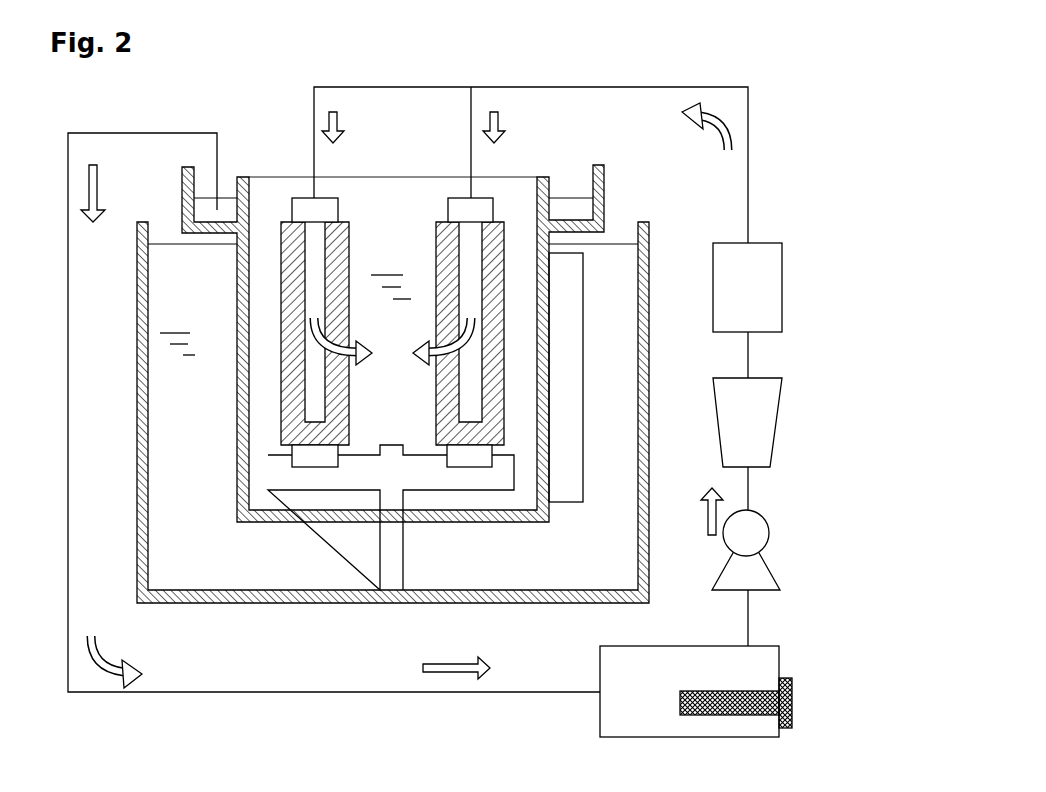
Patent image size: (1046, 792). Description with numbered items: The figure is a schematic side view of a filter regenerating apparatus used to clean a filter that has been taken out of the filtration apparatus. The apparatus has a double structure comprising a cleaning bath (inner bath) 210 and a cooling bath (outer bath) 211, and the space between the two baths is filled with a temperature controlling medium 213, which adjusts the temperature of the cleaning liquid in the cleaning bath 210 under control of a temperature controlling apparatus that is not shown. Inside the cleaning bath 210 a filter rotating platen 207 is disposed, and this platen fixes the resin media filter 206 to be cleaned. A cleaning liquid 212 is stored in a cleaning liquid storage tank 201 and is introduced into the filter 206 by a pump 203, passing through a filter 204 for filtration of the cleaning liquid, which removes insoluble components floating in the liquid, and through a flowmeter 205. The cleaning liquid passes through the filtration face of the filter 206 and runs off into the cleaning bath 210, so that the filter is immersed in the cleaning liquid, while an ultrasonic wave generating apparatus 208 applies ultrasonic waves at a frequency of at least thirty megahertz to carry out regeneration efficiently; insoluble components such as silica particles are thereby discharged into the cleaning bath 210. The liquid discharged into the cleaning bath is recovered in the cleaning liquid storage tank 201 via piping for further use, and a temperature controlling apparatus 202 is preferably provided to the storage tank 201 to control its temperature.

The cleaning liquid storage tank 201 is at (757, 668).
The temperature controlling apparatus 202 is at (792, 691).
The pump 203 is at (757, 578).
The filter for filtration of a cleaning liquid 204 is at (758, 397).
The flowmeter 205 is at (753, 265).
The filter 206 is at (498, 227).
The filter rotating platen 207 is at (353, 470).
The ultrasonic wave generating apparatus 208 is at (564, 297).
The cleaning bath 210 is at (275, 524).
The cooling bath 211 is at (440, 605).
The cleaning liquid 212 is at (358, 197).
The temperature controlling medium 213 is at (602, 557).